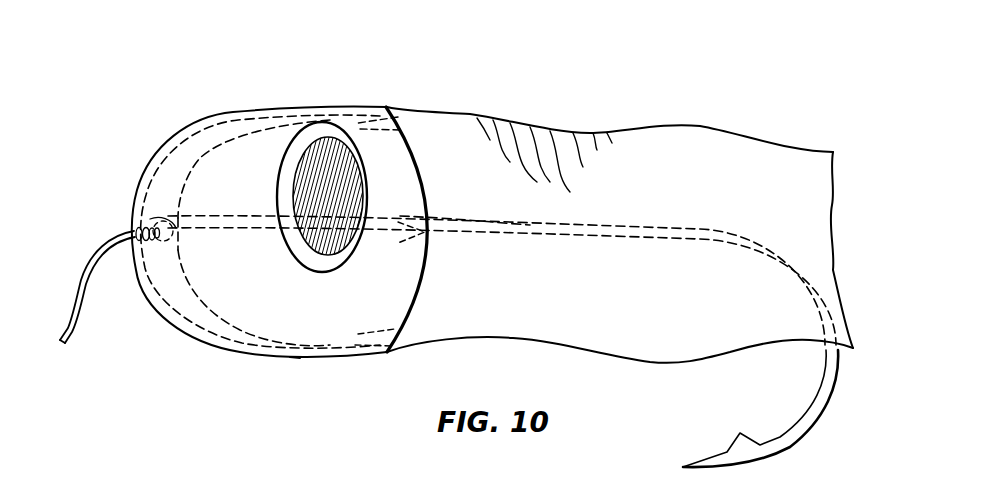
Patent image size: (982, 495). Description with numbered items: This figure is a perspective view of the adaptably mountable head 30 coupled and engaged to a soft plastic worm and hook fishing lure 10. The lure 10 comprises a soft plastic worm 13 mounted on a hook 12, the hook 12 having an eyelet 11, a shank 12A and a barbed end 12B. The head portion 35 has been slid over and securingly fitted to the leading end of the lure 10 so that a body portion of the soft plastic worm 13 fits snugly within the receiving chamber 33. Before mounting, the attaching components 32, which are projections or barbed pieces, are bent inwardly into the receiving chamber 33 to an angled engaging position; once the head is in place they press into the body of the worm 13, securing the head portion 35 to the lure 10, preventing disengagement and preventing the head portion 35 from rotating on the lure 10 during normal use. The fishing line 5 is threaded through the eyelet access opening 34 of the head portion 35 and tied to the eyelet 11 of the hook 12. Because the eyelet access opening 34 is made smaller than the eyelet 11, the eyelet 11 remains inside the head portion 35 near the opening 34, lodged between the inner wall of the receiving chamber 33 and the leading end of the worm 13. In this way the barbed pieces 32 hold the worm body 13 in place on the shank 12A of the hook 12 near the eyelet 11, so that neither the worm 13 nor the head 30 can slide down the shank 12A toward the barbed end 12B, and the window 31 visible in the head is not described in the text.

The soft plastic worm and hook fishing lure 10 is at (725, 112).
The eyelet 11 is at (140, 215).
The hook 12 is at (645, 233).
The shank 12A is at (512, 238).
The barbed end 12B is at (800, 410).
The soft plastic worm 13 is at (586, 142).
The adaptably mountable head 30 is at (282, 100).
The window opening 31 is at (339, 150).
The attaching components 32 is at (390, 113).
The receiving chamber 33 is at (187, 292).
The eyelet access opening 34 is at (135, 233).
The head portion 35 is at (297, 303).
The fishing line 5 is at (77, 323).